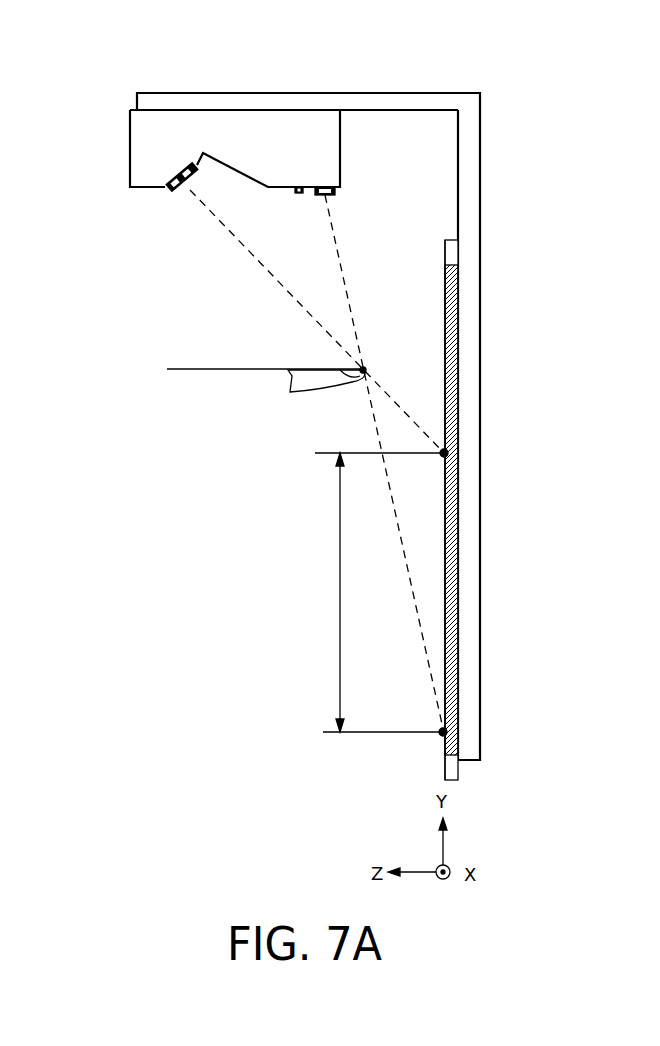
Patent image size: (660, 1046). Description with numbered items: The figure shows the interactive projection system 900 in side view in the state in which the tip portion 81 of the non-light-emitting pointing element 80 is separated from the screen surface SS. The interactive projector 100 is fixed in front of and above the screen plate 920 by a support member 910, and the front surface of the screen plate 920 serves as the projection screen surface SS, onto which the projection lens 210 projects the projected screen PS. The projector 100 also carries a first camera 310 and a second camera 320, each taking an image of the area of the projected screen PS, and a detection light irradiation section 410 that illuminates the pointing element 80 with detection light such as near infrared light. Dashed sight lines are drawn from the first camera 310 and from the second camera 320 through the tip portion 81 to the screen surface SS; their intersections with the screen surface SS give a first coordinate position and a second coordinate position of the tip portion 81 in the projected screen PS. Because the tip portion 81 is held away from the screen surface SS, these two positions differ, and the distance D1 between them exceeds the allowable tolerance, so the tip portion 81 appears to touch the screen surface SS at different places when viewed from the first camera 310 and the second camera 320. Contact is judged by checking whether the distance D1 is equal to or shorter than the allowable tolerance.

The interactive projector 100 is at (280, 120).
The interactive projection system 900 is at (515, 128).
The support member 910 is at (472, 236).
The screen plate 920 is at (450, 252).
The first camera 310 is at (172, 172).
The second camera 320 is at (335, 190).
The projection lens 210 is at (168, 190).
The detection light irradiation section 410 is at (299, 194).
The non-light-emitting pointing element 80 is at (322, 393).
The tip portion 81 is at (368, 370).
The screen surface SS is at (444, 253).
The projected screen PS is at (445, 745).
The distance D1 is at (373, 592).